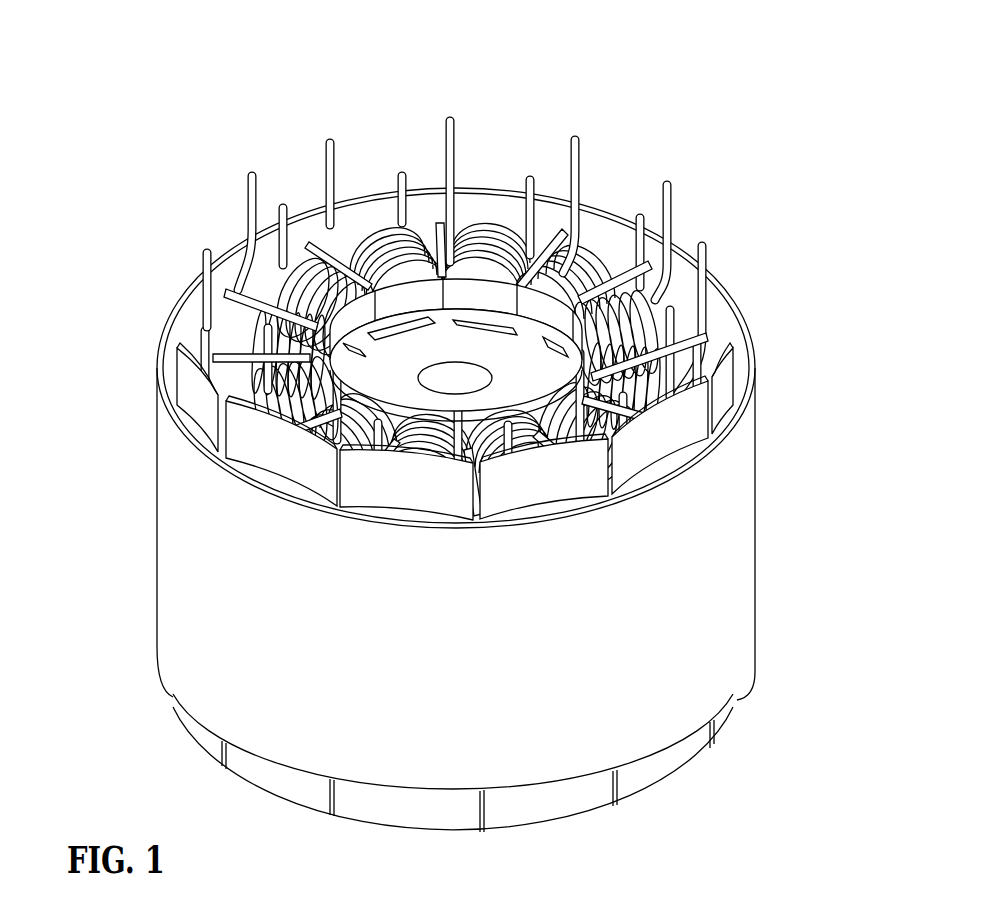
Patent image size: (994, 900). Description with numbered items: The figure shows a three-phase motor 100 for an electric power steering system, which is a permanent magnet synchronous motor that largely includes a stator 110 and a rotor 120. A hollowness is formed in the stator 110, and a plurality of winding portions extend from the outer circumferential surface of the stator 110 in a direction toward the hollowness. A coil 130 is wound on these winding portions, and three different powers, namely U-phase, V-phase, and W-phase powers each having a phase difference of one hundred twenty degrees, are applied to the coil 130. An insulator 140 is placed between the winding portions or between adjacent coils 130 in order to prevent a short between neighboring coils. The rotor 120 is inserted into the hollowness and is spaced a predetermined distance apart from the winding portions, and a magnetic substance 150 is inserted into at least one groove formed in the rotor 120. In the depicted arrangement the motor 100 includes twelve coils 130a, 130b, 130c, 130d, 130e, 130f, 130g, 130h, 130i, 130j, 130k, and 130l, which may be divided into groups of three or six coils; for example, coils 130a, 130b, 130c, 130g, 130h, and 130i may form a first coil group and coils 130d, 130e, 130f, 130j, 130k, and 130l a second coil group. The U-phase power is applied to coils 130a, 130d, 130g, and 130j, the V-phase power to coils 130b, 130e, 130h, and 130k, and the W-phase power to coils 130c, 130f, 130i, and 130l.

The motor 100 is at (186, 189).
The stator 110 is at (175, 525).
The rotor 120 is at (413, 335).
The coil 130 is at (448, 304).
The coil 130a is at (576, 133).
The coil 130b is at (668, 180).
The coil 130c is at (705, 245).
The coil 130d is at (672, 322).
The coil 130e is at (688, 370).
The coil 130f is at (457, 398).
The coil 130g is at (325, 445).
The coil 130h is at (205, 372).
The coil 130i is at (205, 268).
The coil 130j is at (240, 216).
The coil 130k is at (330, 138).
The coil 130l is at (450, 115).
The insulator 140 is at (335, 235).
The magnetic substance 150 is at (515, 300).